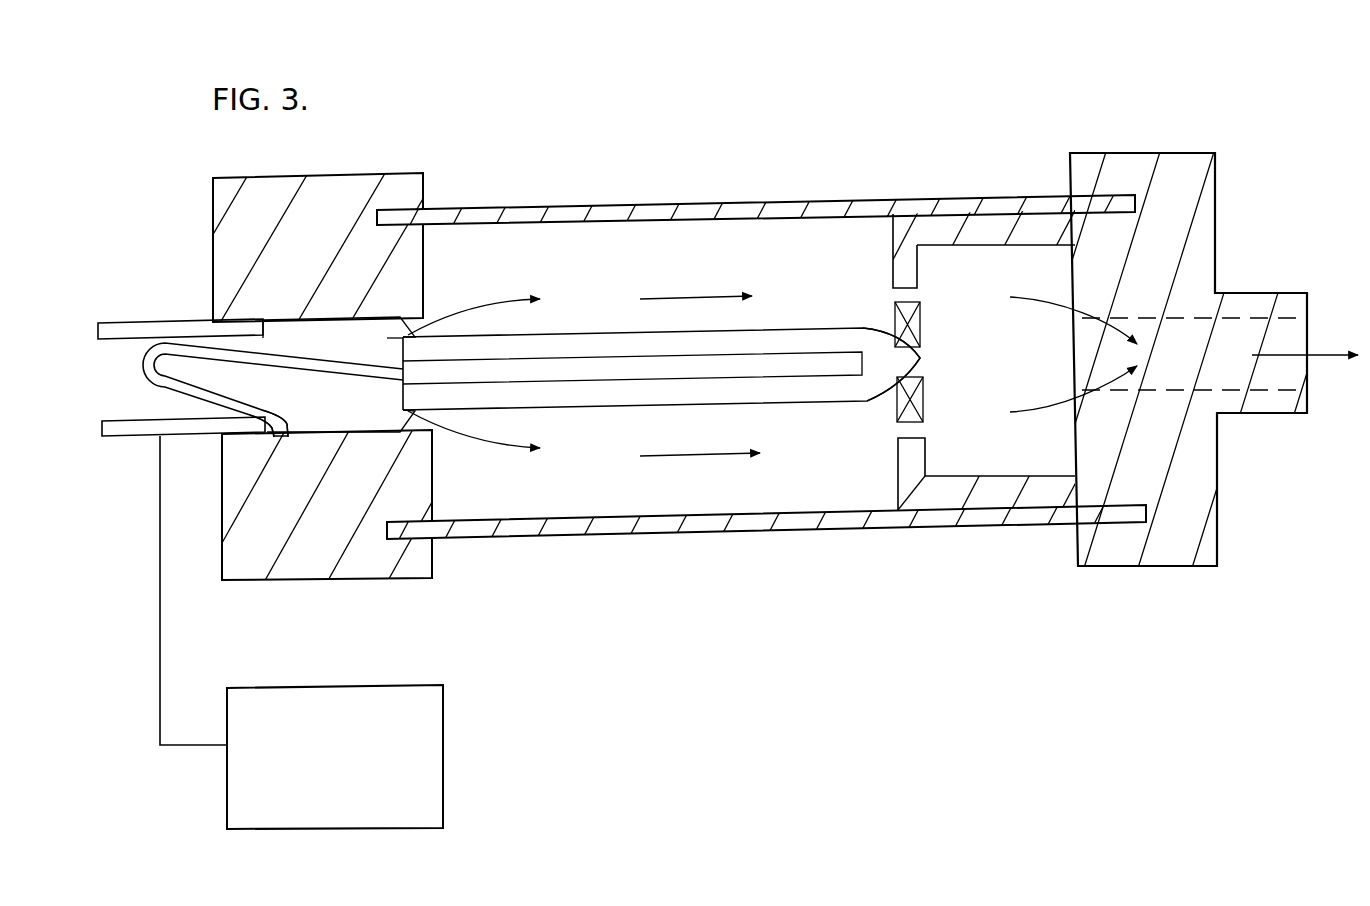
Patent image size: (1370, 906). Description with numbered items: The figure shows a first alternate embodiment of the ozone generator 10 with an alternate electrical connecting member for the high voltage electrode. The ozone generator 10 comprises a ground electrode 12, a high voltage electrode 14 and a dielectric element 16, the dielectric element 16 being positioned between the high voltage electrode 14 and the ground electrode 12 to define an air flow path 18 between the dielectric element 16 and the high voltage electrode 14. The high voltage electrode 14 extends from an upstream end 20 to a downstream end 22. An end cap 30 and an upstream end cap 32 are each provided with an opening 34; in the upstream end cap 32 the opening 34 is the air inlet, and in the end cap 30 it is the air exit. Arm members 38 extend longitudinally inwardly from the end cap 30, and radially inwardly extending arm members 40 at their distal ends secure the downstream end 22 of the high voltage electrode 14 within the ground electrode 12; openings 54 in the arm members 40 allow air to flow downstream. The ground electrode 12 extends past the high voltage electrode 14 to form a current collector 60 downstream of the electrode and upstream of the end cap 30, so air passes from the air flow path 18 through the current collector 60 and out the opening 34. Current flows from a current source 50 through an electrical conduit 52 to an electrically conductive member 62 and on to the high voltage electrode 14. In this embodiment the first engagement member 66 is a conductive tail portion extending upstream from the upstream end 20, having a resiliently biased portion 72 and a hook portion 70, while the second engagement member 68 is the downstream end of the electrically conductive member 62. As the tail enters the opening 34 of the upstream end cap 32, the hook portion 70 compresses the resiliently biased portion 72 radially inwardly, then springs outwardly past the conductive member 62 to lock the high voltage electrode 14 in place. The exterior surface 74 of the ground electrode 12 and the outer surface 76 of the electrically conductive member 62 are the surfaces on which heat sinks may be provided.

The ozone generator 10 is at (716, 168).
The ground electrode 12 is at (607, 546).
The high voltage electrode 14 is at (795, 350).
The dielectric element 16 is at (607, 330).
The air flow path 18 is at (698, 485).
The upstream end 20 is at (403, 410).
The downstream end 22 is at (868, 398).
The end cap 30 is at (1157, 173).
The upstream end cap 32 is at (365, 582).
The opening 34 is at (1280, 318).
The arm members 38 is at (960, 212).
The radially inwardly extending arm members 40 is at (892, 262).
The current source 50 is at (450, 741).
The electrical conduit 52 is at (168, 628).
The openings 54 is at (897, 292).
The current collector 60 is at (1006, 207).
The electrically conductive member 62 is at (112, 440).
The first engagement member 66 is at (366, 369).
The second engagement member 68 is at (300, 432).
The hook portion 70 is at (282, 428).
The resiliently biased portion 72 is at (148, 360).
The exterior surface 74 is at (556, 205).
The outer surface 76 is at (105, 318).